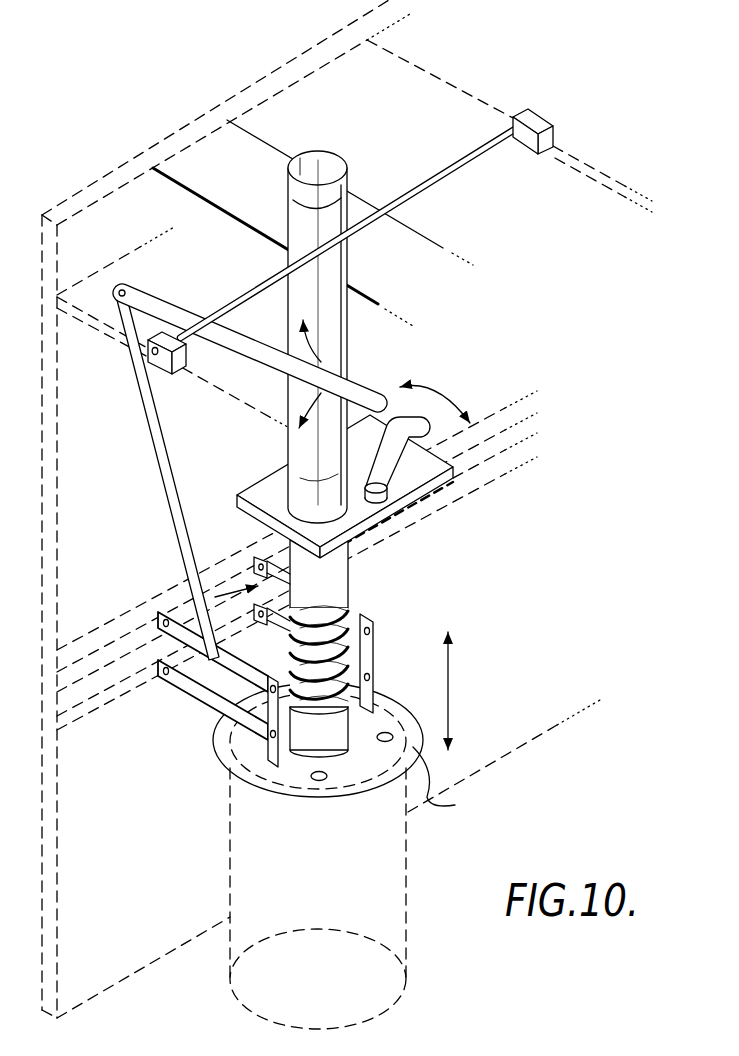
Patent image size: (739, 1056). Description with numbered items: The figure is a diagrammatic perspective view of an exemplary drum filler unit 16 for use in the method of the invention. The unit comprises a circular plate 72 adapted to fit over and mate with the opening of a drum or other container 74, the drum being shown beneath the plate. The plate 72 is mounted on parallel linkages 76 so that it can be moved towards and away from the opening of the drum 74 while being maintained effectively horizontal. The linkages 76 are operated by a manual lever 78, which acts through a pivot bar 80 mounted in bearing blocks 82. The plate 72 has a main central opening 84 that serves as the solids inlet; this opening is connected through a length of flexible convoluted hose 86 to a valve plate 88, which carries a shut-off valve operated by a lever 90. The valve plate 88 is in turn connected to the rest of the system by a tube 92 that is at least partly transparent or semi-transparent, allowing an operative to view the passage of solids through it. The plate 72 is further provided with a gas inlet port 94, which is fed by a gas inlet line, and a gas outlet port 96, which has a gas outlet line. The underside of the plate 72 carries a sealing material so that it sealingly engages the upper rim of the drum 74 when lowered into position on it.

The drum filler unit 16 is at (480, 696).
The circular plate 72 is at (454, 784).
The drum or other container 74 is at (395, 905).
The parallel linkages 76 is at (354, 650).
The manual lever 78 is at (363, 394).
The pivot bar 80 is at (453, 170).
The bearing blocks 82 is at (556, 130).
The main central opening 84 is at (263, 790).
The flexible convoluted hose 86 is at (337, 617).
The valve plate 88 is at (423, 493).
The lever 90 is at (432, 427).
The tube 92 is at (297, 452).
The gas inlet port 94 is at (317, 780).
The gas outlet port 96 is at (387, 733).